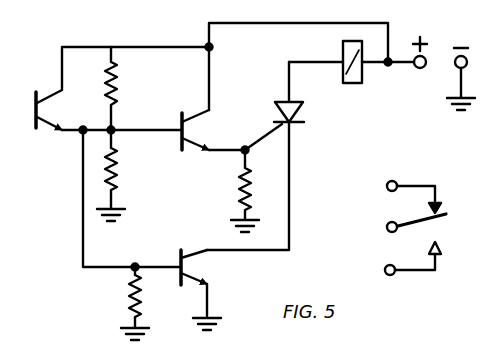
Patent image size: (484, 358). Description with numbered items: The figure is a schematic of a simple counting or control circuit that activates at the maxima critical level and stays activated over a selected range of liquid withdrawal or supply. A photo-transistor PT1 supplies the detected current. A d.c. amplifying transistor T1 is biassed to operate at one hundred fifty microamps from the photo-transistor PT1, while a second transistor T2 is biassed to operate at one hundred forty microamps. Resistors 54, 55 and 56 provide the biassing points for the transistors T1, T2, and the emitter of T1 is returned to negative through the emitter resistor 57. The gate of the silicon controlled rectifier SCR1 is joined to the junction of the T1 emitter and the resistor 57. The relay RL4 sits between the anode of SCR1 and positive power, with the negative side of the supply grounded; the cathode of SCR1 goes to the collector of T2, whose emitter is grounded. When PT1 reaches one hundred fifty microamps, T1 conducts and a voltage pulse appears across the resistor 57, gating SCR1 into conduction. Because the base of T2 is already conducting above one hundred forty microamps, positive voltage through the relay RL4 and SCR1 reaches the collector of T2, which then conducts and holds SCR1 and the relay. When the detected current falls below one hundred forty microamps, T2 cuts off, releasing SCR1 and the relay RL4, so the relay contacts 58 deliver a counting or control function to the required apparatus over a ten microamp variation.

The photo-transistor PT1 is at (48, 88).
The resistor 54 is at (119, 82).
The resistor 55 is at (118, 178).
The resistor 56 is at (127, 296).
The emitter resistor 57 is at (242, 190).
The d.c. amplifying transistor T1 is at (192, 109).
The second transistor T2 is at (207, 267).
The silicon controlled rectifier SCR1 is at (295, 128).
The relay RL4 is at (362, 81).
The relay contacts 58 is at (387, 251).